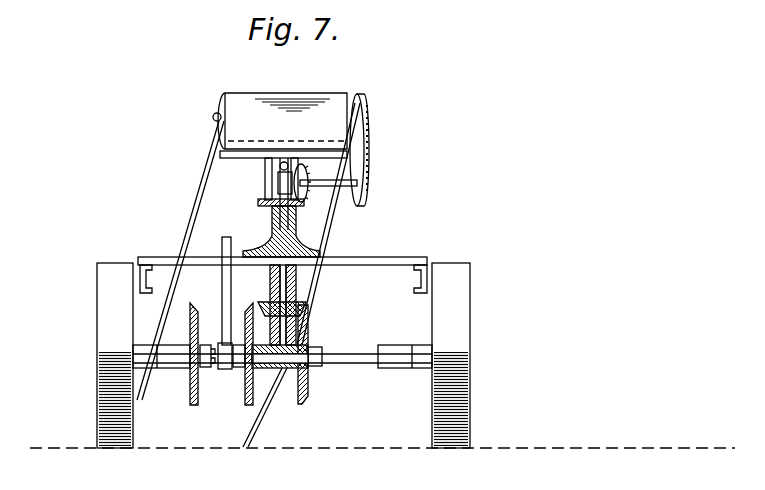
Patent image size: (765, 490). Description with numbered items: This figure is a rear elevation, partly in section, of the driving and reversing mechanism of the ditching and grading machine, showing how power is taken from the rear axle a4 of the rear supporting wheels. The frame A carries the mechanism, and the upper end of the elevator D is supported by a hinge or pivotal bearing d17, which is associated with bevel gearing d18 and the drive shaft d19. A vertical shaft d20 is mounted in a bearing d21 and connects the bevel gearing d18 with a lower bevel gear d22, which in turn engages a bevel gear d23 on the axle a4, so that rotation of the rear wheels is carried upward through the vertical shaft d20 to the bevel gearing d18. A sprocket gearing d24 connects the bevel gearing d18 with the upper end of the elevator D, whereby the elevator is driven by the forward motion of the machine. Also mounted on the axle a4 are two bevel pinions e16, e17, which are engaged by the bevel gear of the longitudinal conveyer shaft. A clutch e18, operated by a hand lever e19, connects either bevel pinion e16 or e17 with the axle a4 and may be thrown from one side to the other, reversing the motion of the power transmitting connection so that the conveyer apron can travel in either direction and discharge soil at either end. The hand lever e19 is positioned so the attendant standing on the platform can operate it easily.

The frame A is at (142, 282).
The drum D is at (259, 107).
The sprocket gearing d24 is at (363, 147).
The drive shaft d19 is at (366, 162).
The hinge or pivotal bearing d17 is at (306, 196).
The bevel gearing d18 is at (287, 180).
The bearing d21 is at (316, 246).
The hand lever e19 is at (227, 252).
The vertical shaft d20 is at (291, 282).
The lower bevel gear d22 is at (306, 312).
The bevel gear d23 is at (308, 338).
The rear axle a4 is at (357, 357).
The clutch e18 is at (223, 367).
The bevel pinion e17 is at (192, 410).
The bevel pinion e16 is at (192, 410).